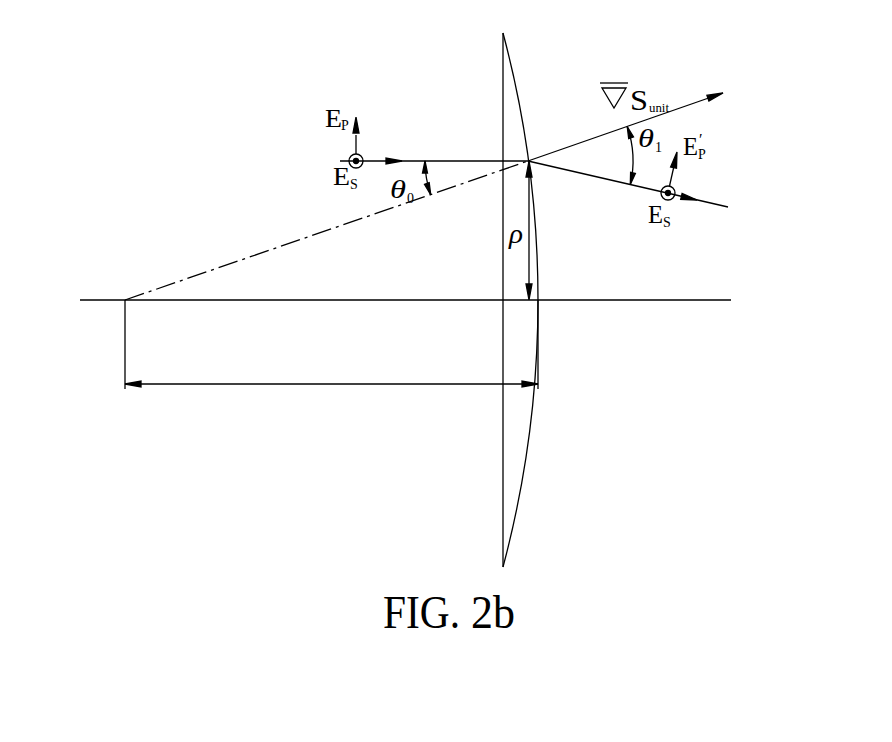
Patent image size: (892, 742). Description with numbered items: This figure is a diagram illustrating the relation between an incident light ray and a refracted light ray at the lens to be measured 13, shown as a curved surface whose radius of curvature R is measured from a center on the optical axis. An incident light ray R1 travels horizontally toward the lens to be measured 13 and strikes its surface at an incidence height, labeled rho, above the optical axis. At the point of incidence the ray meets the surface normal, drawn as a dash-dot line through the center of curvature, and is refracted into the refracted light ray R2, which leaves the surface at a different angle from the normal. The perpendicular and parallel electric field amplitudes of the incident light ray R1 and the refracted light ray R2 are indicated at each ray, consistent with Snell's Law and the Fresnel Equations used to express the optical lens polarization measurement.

The lens to be measured 13 is at (503, 33).
The radius of curvature of lens surface R is at (331, 344).
The incident light ray R1 is at (434, 149).
The refracted light ray R2 is at (629, 184).